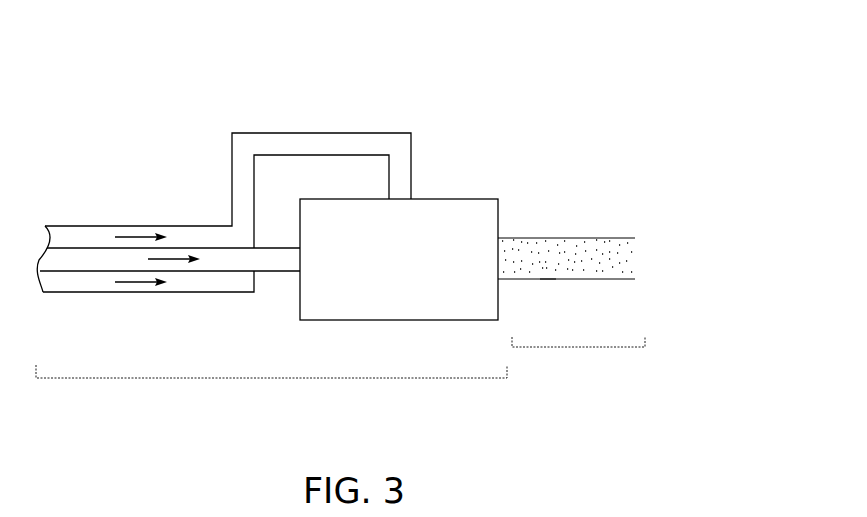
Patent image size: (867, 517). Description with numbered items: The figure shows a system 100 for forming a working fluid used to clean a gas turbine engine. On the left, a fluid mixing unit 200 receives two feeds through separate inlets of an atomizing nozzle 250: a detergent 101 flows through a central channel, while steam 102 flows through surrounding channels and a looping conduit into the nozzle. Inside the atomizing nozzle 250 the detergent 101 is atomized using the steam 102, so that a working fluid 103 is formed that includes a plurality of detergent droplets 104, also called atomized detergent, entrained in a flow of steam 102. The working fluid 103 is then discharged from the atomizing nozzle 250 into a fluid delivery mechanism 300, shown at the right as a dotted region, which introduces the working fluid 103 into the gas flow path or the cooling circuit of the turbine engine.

The system 100 is at (538, 60).
The detergent 101 is at (73, 256).
The steam 102 is at (82, 280).
The working fluid 103 is at (580, 347).
The detergent droplets 104 is at (547, 282).
The fluid mixing unit 200 is at (271, 378).
The atomizing nozzle 250 is at (421, 270).
The fluid delivery mechanism 300 is at (568, 238).